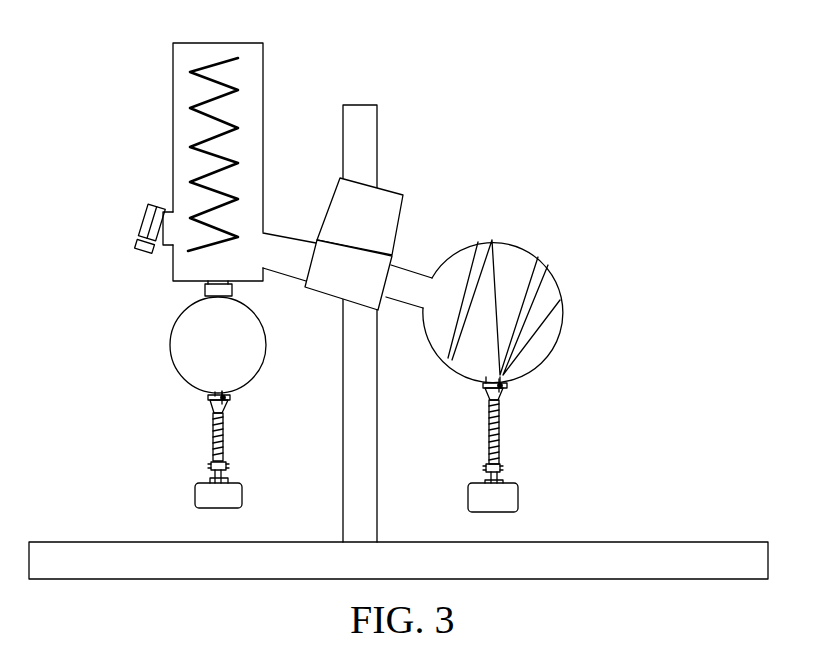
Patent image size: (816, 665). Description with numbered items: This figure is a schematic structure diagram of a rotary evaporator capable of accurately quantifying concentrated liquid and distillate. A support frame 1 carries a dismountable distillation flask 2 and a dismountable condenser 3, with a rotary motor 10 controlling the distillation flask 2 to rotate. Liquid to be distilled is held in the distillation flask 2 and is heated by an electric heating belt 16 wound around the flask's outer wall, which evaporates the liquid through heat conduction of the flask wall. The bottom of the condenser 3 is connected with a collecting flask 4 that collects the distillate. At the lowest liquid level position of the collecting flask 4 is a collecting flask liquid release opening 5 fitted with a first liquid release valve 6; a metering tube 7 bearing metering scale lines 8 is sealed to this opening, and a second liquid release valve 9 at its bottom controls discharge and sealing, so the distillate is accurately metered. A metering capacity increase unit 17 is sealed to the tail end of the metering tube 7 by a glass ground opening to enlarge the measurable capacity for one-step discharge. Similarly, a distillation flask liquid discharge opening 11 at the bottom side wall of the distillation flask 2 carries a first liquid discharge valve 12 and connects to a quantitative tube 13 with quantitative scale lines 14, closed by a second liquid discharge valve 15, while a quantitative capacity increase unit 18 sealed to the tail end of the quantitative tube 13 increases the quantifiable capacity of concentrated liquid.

The support frame 1 is at (360, 137).
The distillation flask 2 is at (507, 257).
The condenser 3 is at (243, 73).
The collecting flask 4 is at (198, 330).
The collecting flask liquid release opening 5 is at (210, 392).
The first liquid release valve 6 is at (230, 397).
The metering tube 7 is at (223, 450).
The metering scale line 8 is at (223, 430).
The second liquid release valve 9 is at (229, 466).
The rotary motor 10 is at (377, 212).
The distillation flask liquid discharge opening 11 is at (483, 382).
The first liquid discharge valve 12 is at (507, 384).
The quantitative tube 13 is at (499, 450).
The quantitative scale line 14 is at (499, 422).
The second liquid discharge valve 15 is at (503, 468).
The electric heating belt 16 is at (523, 312).
The metering capacity increase unit 17 is at (220, 500).
The quantitative capacity increase unit 18 is at (500, 500).